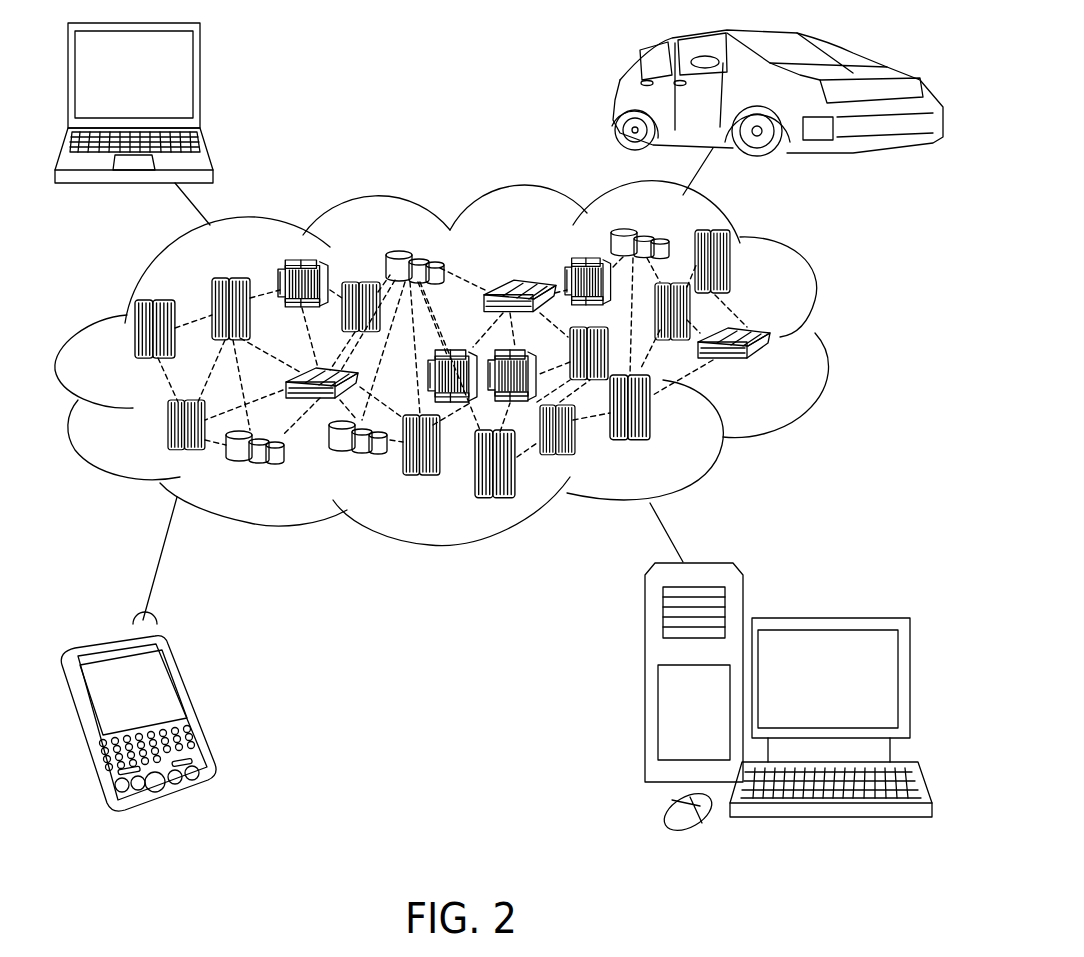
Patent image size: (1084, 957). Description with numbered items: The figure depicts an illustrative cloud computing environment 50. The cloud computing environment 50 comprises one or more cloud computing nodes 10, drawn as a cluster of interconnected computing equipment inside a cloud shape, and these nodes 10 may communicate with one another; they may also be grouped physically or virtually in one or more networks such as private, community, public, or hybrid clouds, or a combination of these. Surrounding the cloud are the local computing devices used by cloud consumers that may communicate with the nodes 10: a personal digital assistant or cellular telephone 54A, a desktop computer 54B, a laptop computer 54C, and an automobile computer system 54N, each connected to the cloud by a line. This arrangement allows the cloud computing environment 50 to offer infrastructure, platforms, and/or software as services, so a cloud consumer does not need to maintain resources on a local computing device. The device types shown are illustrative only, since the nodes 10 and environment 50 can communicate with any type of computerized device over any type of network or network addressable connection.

The cloud computing nodes 10 is at (797, 388).
The cloud computing environment 50 is at (827, 343).
The personal digital assistant (PDA) or cellular telephone 54A is at (190, 708).
The desktop computer 54B is at (852, 617).
The laptop computer 54C is at (200, 75).
The automobile computer system 54N is at (620, 98).